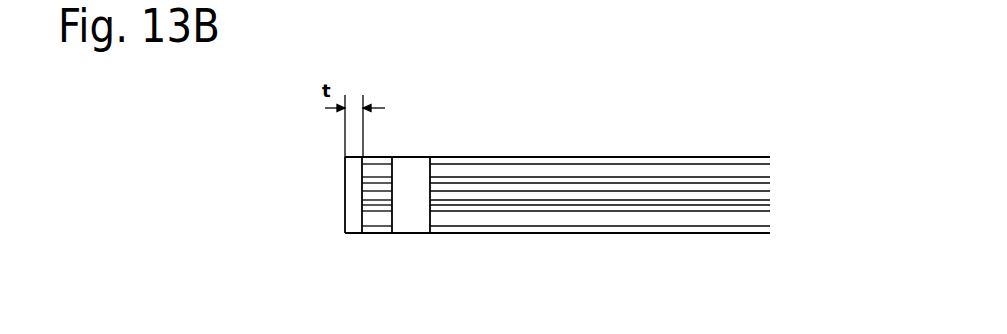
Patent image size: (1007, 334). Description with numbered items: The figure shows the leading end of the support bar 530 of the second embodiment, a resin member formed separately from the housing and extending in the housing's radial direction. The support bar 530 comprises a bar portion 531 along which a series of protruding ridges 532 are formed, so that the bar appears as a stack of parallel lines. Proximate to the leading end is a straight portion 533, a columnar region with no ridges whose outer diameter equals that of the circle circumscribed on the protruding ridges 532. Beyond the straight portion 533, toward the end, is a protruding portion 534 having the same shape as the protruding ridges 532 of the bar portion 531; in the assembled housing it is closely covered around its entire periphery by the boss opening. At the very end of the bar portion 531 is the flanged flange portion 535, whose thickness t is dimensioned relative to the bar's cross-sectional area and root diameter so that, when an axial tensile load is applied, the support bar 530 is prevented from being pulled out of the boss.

The support bar 530 is at (712, 157).
The bar portion 531 is at (745, 207).
The protruding ridge 532 is at (632, 217).
The straight portion 533 is at (410, 168).
The protruding portion 534 is at (380, 217).
The flange portion 535 is at (355, 213).